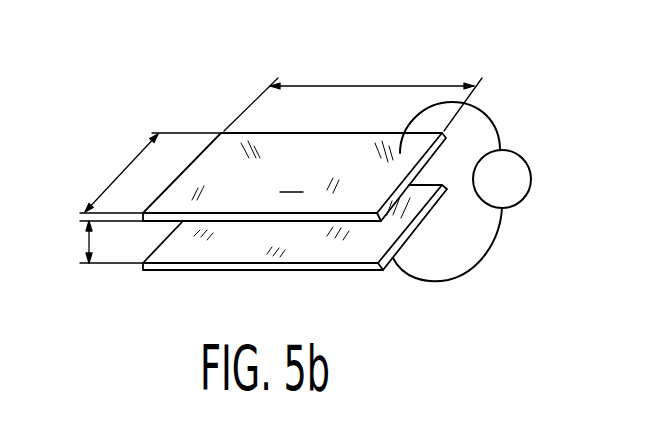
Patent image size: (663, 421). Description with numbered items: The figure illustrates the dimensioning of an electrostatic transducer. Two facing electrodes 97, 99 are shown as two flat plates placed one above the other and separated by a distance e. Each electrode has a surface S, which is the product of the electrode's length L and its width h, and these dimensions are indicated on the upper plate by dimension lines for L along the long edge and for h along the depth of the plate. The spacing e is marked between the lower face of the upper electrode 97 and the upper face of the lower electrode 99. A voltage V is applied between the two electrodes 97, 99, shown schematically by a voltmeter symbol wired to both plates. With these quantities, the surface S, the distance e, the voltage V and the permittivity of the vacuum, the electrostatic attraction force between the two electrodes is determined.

The upper electrode plate 97 is at (228, 140).
The lower electrode plate 99 is at (342, 252).
The voltage V is at (462, 191).
The surface of each electrode S is at (292, 176).
The length of the electrode L is at (353, 96).
The width of the electrode h is at (150, 173).
The distance between the electrodes e is at (102, 242).